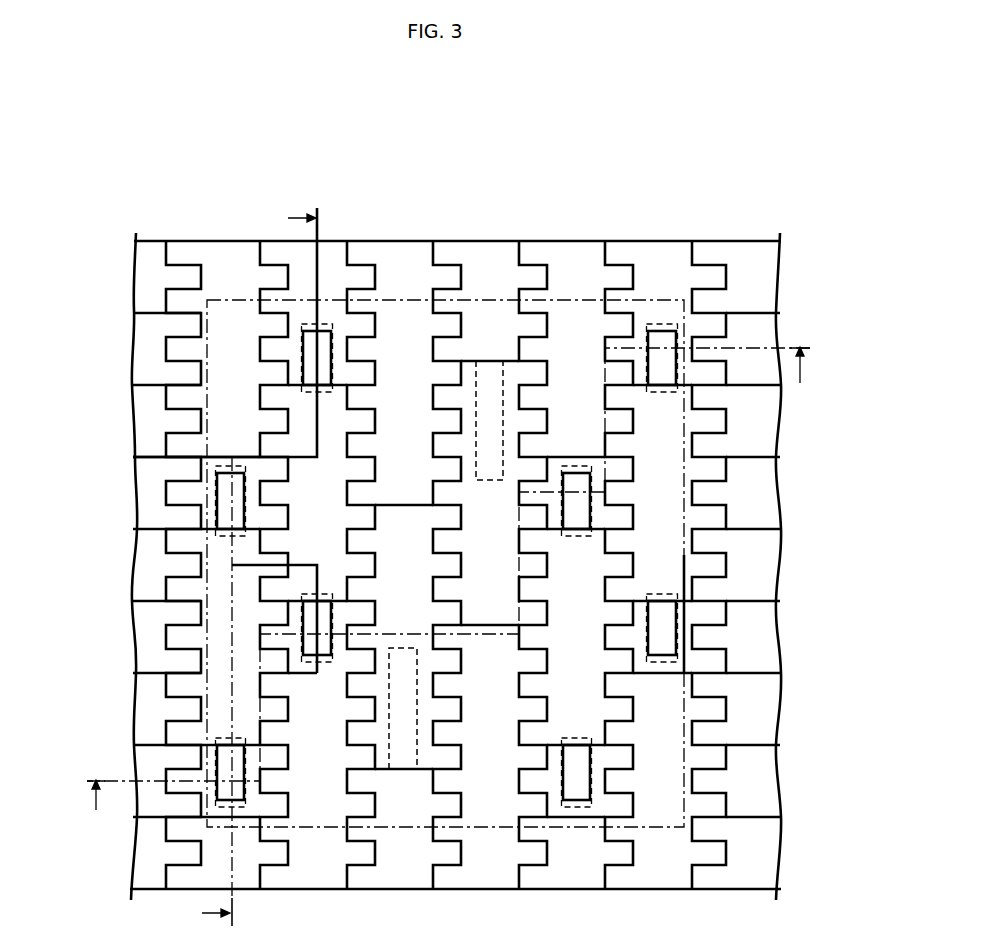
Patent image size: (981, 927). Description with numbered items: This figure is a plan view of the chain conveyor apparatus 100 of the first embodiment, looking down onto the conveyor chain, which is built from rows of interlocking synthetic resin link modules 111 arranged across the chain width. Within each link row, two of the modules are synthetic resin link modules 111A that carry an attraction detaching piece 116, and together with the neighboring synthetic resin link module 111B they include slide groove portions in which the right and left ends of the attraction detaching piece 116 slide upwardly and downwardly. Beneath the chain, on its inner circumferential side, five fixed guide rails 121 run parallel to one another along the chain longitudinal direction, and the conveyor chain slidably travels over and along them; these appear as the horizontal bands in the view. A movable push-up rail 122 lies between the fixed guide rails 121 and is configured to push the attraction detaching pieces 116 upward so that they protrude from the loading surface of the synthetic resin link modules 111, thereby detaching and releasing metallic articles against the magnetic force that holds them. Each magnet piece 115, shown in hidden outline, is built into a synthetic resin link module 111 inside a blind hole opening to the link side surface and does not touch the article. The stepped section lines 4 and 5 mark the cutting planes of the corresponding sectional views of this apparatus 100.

The display device 100 is at (647, 129).
The synthetic resin link module 111 is at (338, 250).
The synthetic resin link module 111A is at (363, 370).
The synthetic resin link module 111B is at (363, 420).
The magnet piece 115 is at (490, 466).
The attraction detaching piece 116 is at (312, 347).
The fixed guide rail 121 is at (155, 275).
The movable push-up rail 122 is at (150, 337).
The section line 4- 4 is at (448, 593).
The section line 5- 5 is at (225, 567).